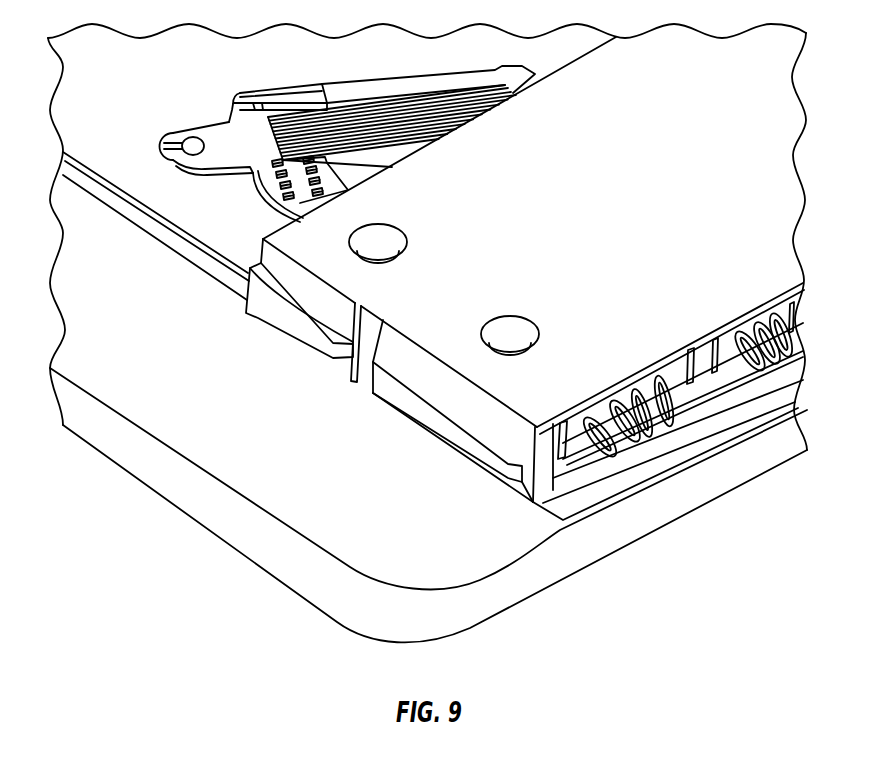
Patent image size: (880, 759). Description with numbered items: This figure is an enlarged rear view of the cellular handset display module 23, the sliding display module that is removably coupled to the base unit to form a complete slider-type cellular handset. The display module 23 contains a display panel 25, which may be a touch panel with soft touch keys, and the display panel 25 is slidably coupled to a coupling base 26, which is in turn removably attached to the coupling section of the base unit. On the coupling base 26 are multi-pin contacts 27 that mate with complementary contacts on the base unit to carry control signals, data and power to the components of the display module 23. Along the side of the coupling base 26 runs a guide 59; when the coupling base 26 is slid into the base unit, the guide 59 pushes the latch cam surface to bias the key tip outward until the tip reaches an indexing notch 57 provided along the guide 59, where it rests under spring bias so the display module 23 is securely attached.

The display module 23 is at (107, 505).
The display panel 25 is at (80, 253).
The coupling base 26 is at (781, 163).
The contacts 27 is at (800, 350).
The indexing notch 57 is at (360, 382).
The guide 59 is at (460, 438).